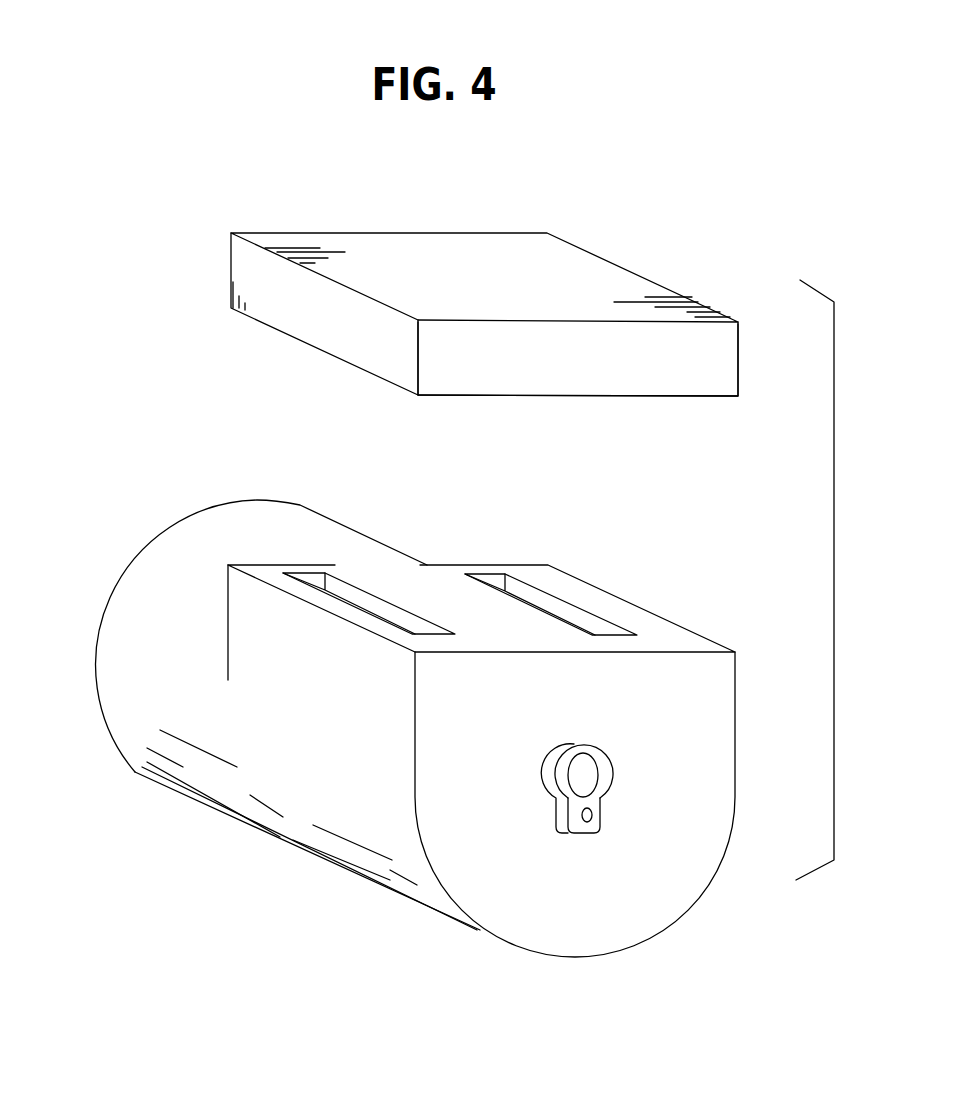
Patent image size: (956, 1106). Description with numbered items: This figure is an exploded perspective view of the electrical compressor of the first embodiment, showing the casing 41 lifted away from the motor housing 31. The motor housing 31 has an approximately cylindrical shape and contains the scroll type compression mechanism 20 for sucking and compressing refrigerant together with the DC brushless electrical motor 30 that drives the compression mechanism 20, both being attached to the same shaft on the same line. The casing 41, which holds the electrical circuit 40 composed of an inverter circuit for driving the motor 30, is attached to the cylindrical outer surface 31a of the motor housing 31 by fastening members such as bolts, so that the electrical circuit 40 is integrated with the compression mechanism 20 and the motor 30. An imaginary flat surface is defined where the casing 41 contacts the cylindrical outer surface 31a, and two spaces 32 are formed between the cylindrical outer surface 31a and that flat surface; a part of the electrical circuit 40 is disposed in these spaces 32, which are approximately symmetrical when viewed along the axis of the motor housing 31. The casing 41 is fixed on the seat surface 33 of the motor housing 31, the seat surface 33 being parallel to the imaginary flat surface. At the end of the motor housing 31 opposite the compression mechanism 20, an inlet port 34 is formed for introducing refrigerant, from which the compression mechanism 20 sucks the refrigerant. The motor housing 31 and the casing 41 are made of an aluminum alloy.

The compression mechanism 20 is at (126, 597).
The electrical motor 30 is at (325, 797).
The motor housing 31 is at (388, 865).
The cylindrical outer surface 31a is at (236, 793).
The spaces 32 is at (383, 607).
The seat surface 33 is at (653, 632).
The inlet port 34 is at (585, 777).
The electrical circuit 40 is at (656, 278).
The casing 41 is at (740, 362).